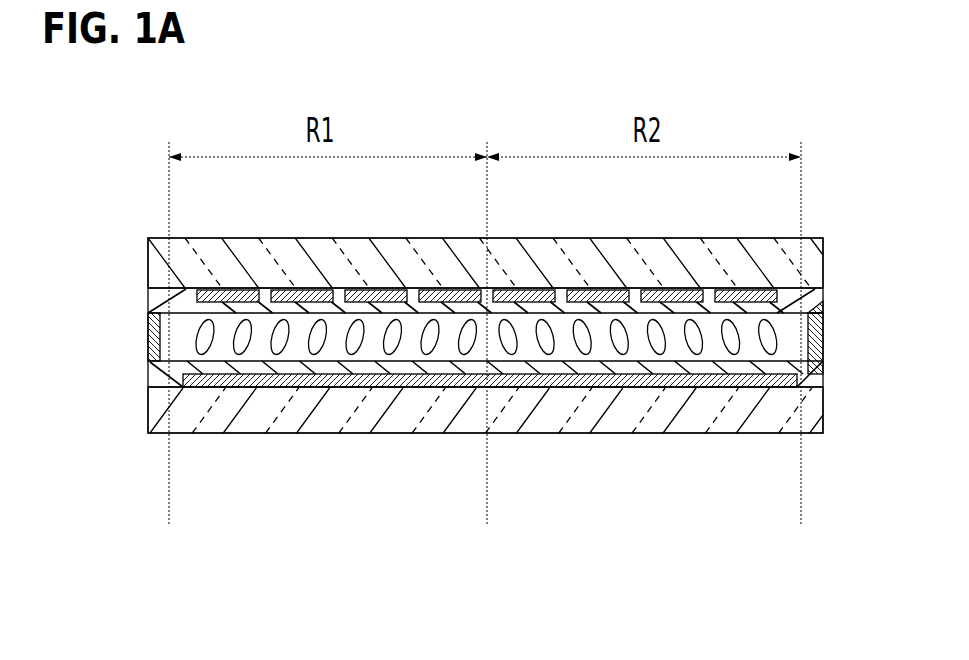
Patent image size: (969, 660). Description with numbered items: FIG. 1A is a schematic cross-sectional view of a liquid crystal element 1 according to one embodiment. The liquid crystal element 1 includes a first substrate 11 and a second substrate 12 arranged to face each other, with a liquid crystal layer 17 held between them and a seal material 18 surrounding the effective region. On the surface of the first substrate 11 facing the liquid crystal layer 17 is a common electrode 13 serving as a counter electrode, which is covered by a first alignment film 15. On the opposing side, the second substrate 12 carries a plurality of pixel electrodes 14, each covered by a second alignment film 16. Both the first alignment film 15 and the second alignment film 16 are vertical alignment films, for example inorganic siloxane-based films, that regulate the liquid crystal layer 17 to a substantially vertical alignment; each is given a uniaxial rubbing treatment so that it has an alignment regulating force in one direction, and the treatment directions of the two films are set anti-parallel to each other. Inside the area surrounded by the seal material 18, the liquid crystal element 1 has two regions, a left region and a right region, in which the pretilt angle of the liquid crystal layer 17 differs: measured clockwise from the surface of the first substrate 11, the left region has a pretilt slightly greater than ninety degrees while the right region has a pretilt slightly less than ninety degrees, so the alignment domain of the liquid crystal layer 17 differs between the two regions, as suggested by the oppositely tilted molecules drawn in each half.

The liquid crystal element 1 is at (482, 618).
The first substrate 11 is at (823, 413).
The second substrate 12 is at (823, 263).
The common electrode 13 is at (242, 387).
The pixel electrodes 14 is at (236, 300).
The first alignment film 15 is at (823, 376).
The second alignment film 16 is at (823, 300).
The liquid crystal layer 17 is at (604, 361).
The seal material 18 is at (812, 340).